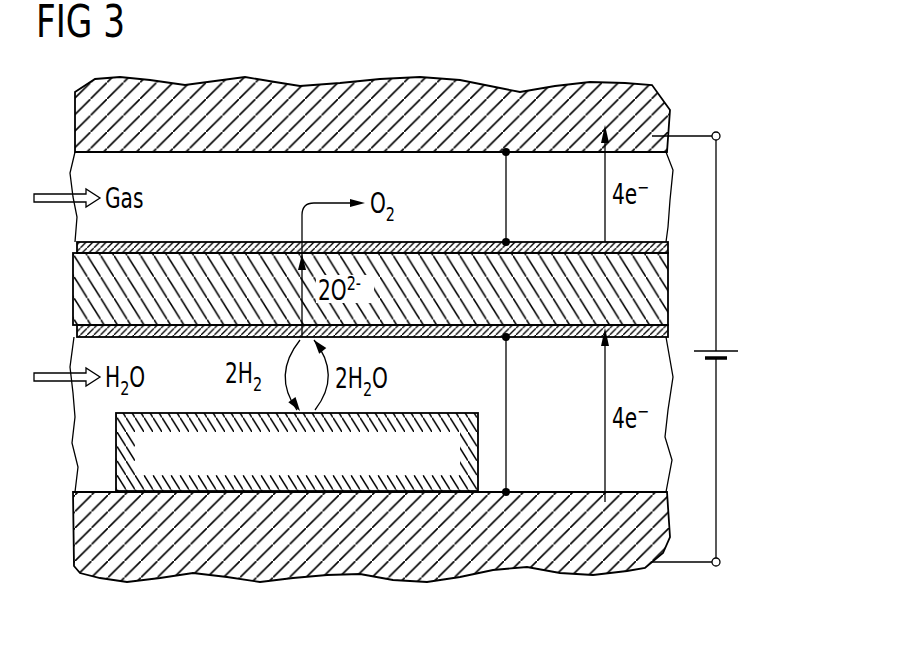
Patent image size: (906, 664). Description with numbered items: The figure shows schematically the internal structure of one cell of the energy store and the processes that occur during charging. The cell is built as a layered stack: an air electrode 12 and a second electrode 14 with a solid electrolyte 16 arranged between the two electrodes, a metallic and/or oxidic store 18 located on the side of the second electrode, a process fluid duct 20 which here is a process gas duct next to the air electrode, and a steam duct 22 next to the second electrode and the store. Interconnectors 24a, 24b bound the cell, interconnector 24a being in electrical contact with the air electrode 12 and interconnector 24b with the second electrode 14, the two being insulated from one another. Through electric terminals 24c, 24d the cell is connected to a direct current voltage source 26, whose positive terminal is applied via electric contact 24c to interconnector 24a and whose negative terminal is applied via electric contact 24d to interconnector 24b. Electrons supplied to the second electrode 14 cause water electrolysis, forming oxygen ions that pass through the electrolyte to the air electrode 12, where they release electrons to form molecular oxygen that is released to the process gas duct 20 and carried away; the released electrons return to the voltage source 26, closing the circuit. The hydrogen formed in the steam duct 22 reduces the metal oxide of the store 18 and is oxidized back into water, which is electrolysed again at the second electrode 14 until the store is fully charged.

The air electrode 12 is at (237, 250).
The second electrode 14 is at (185, 340).
The solid electrolyte 16 is at (195, 260).
The metallic and/or oxidic store 18 is at (449, 413).
The process fluid duct 20 is at (477, 205).
The steam duct 22 is at (557, 427).
The interconnector 24a is at (484, 93).
The interconnector 24b is at (483, 562).
The electric terminal 24c is at (720, 136).
The electric terminal 24d is at (720, 562).
The direct current voltage source 26 is at (727, 349).